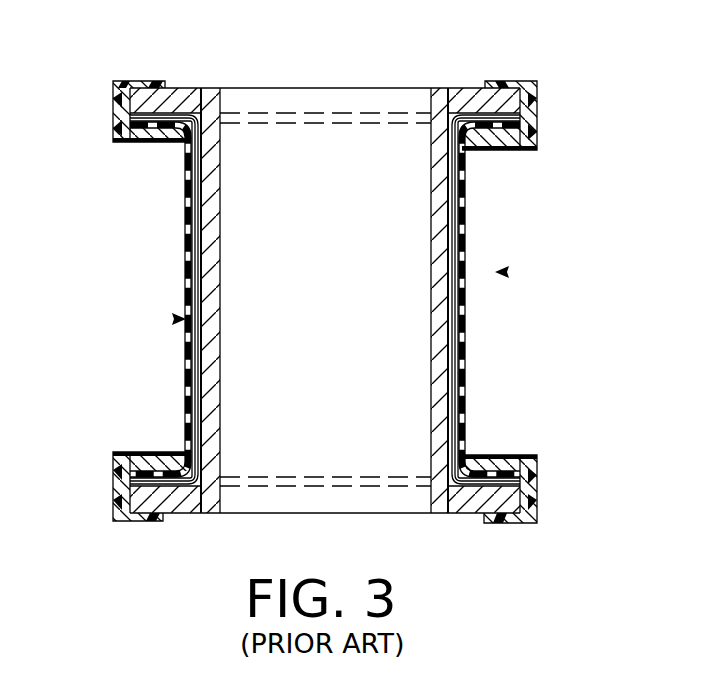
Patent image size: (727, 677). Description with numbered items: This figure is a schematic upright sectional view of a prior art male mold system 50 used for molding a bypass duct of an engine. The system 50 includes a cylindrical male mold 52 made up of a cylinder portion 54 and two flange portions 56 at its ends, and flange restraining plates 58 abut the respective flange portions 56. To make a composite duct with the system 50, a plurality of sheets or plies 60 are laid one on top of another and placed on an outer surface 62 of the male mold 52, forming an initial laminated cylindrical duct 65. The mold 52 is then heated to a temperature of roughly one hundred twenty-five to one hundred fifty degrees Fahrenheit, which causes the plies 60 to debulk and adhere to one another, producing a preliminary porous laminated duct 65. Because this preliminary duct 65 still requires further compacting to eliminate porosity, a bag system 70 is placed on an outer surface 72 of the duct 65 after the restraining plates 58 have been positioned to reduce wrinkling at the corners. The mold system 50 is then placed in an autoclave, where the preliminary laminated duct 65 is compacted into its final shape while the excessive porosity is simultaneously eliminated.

The male mold system 50 is at (430, 52).
The cylindrical male mold 52 is at (221, 192).
The cylinder portion 54 is at (436, 287).
The flange portions 56 is at (203, 88).
The flange restraining plates 58 is at (160, 144).
The plies 60 is at (451, 370).
The outer surface of the male mold 62 is at (188, 210).
The laminated cylindrical duct 65 is at (176, 319).
The bag system 70 is at (507, 271).
The outer surface of the duct 72 is at (196, 268).